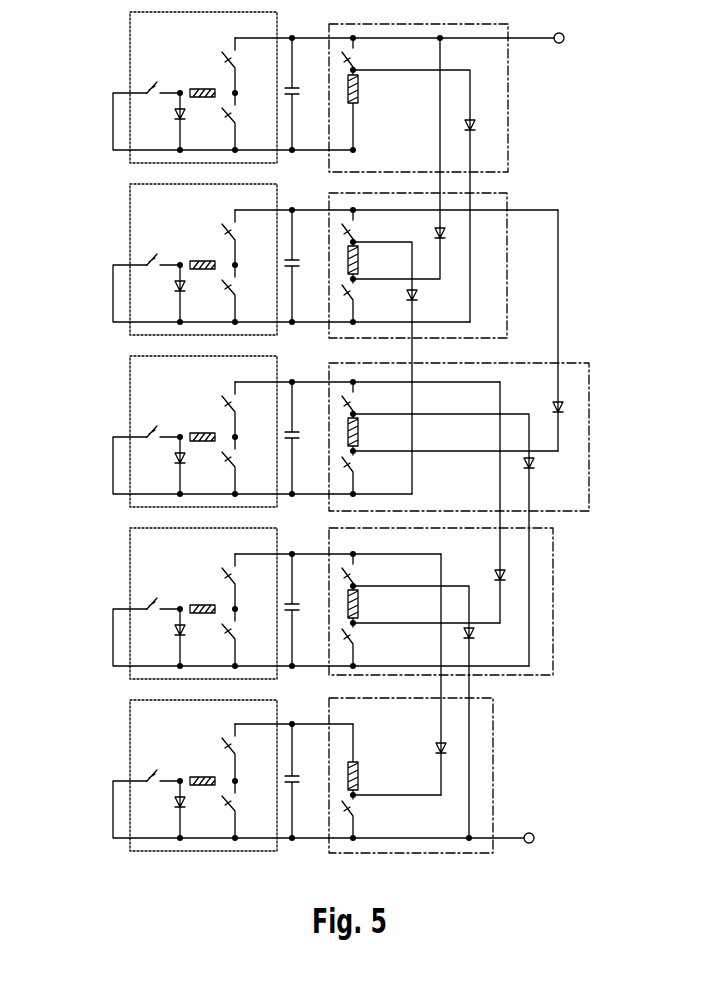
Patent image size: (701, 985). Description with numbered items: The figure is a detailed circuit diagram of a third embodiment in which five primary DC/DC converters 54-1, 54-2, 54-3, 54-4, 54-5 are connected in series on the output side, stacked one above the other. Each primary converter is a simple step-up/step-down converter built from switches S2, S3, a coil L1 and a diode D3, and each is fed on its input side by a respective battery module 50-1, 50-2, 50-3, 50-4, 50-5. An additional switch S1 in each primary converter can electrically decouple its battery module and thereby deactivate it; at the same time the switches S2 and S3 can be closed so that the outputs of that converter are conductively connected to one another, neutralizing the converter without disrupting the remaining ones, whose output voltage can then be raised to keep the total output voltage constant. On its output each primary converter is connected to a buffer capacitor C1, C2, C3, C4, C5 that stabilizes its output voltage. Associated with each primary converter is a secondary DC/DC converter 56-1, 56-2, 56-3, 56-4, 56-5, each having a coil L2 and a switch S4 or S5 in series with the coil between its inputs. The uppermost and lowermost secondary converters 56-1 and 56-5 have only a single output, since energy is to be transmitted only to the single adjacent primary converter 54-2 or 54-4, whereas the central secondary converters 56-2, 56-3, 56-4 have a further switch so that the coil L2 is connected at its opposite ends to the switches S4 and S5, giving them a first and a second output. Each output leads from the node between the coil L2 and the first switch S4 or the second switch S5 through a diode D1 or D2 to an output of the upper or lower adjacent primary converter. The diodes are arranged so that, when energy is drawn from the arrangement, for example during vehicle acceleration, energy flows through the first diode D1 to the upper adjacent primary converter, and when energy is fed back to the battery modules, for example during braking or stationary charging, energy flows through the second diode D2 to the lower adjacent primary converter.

The primary DC/DC converter 54-1 is at (130, 60).
The primary DC/DC converter 54-2 is at (130, 232).
The primary DC/DC converter 54-3 is at (130, 404).
The primary DC/DC converter 54-4 is at (130, 576).
The primary DC/DC converter 54-5 is at (130, 748).
The battery module 50-1 is at (118, 123).
The battery module 50-2 is at (118, 295).
The battery module 50-3 is at (118, 467).
The battery module 50-4 is at (118, 639).
The battery module 50-5 is at (118, 811).
The secondary DC/DC converter 56-1 is at (508, 75).
The secondary DC/DC converter 56-2 is at (507, 200).
The secondary DC/DC converter 56-3 is at (589, 363).
The secondary DC/DC converter 56-4 is at (515, 675).
The secondary DC/DC converter 56-5 is at (493, 776).
The additional switch S1 is at (148, 424).
The switch S2 is at (238, 117).
The switch S3 is at (238, 57).
The first switch S4 is at (353, 294).
The second switch S5 is at (353, 50).
The coil L1 is at (202, 429).
The coil L2 is at (361, 432).
The first diode D1 is at (453, 454).
The second diode D2 is at (468, 416).
The diode D3 is at (189, 465).
The buffer capacitor C1 is at (301, 94).
The buffer capacitor C2 is at (301, 266).
The buffer capacitor C3 is at (301, 438).
The buffer capacitor C4 is at (301, 610).
The buffer capacitor C5 is at (301, 781).